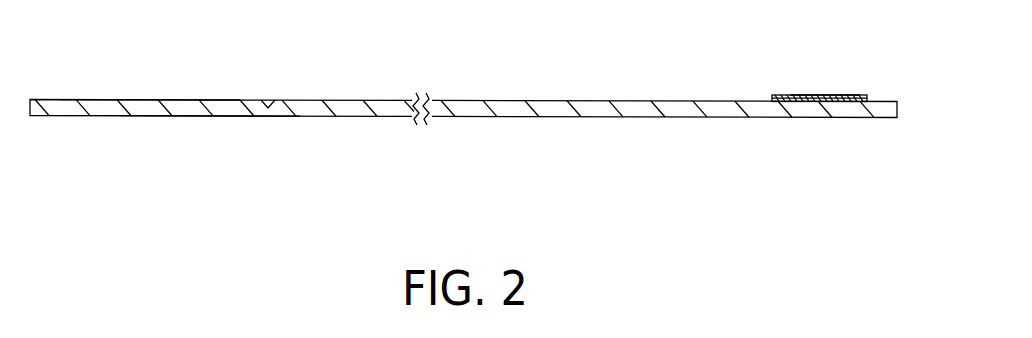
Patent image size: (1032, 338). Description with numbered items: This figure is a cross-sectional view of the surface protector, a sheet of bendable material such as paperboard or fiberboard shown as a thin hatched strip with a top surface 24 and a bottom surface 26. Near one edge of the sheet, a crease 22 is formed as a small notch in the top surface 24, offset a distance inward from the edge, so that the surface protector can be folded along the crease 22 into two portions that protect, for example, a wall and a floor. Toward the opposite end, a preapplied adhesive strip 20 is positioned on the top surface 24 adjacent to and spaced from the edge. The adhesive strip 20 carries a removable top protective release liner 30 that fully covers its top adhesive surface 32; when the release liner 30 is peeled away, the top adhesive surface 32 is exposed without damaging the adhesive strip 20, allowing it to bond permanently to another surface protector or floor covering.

The adhesive strip 20 is at (866, 102).
The crease 22 is at (268, 102).
The top surface 24 is at (147, 100).
The bottom surface 26 is at (200, 116).
The top protective release liner 30 is at (772, 97).
The top adhesive surface 32 is at (805, 95).